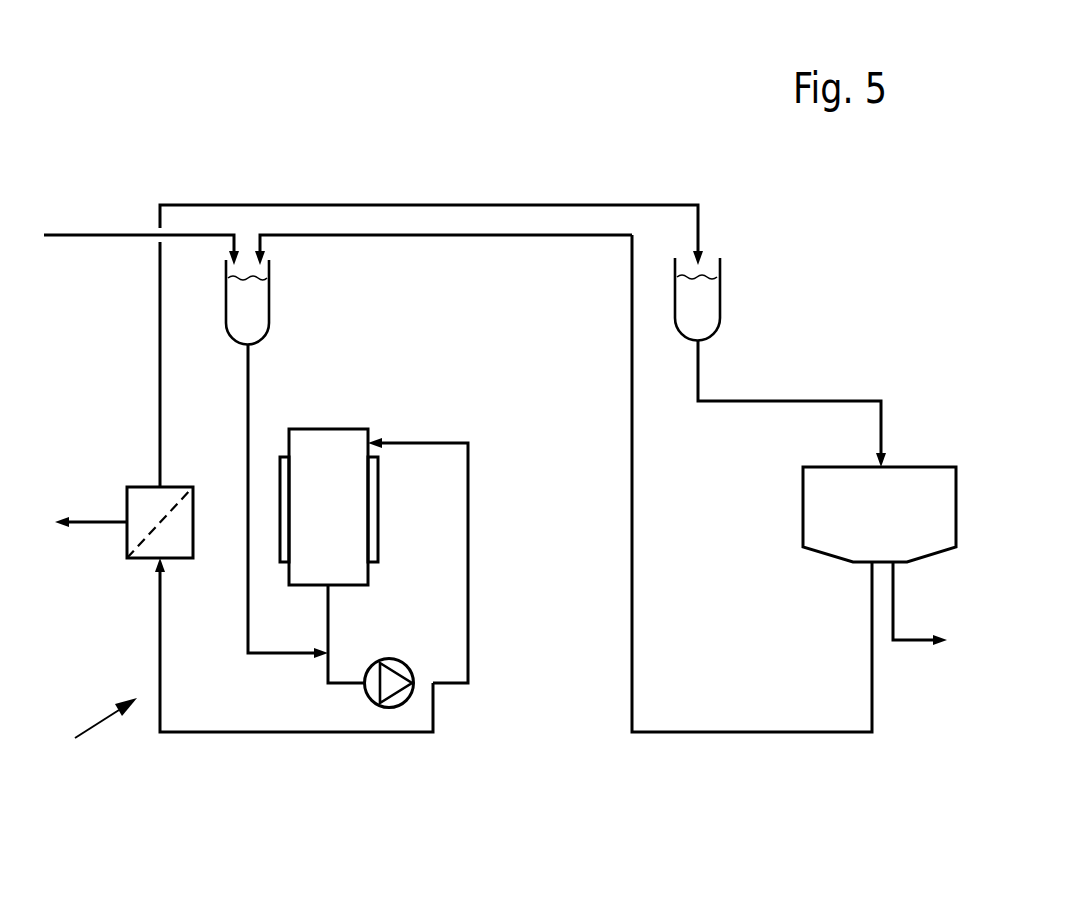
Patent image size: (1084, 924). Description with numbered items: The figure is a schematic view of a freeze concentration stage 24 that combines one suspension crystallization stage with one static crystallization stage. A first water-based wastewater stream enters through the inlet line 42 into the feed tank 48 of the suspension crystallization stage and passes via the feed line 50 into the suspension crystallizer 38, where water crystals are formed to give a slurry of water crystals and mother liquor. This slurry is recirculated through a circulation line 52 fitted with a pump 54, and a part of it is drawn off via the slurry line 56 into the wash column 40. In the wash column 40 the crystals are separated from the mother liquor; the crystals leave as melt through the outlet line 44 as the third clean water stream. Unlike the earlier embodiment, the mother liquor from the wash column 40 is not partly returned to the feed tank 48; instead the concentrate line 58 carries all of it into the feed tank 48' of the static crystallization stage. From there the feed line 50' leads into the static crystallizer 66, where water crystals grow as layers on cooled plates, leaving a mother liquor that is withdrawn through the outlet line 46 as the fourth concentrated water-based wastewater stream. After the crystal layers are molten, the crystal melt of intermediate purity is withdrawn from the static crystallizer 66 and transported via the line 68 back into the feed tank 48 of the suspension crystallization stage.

The freeze concentration stage 24 is at (90, 731).
The suspension crystallizer 38 is at (343, 520).
The wash column 40 is at (148, 507).
The inlet line 42 is at (90, 238).
The outlet line 44 is at (103, 525).
The outlet line 46 is at (893, 602).
The feed tank 48 is at (247, 302).
The feed tank 48' is at (697, 299).
The feed line 50 is at (258, 502).
The feed line 50' is at (792, 402).
The circulation line 52 is at (467, 556).
The pump 54 is at (395, 668).
The slurry line 56 is at (265, 735).
The concentrate line 58 is at (160, 385).
The static crystallizer 66 is at (865, 531).
The line 68 is at (745, 732).